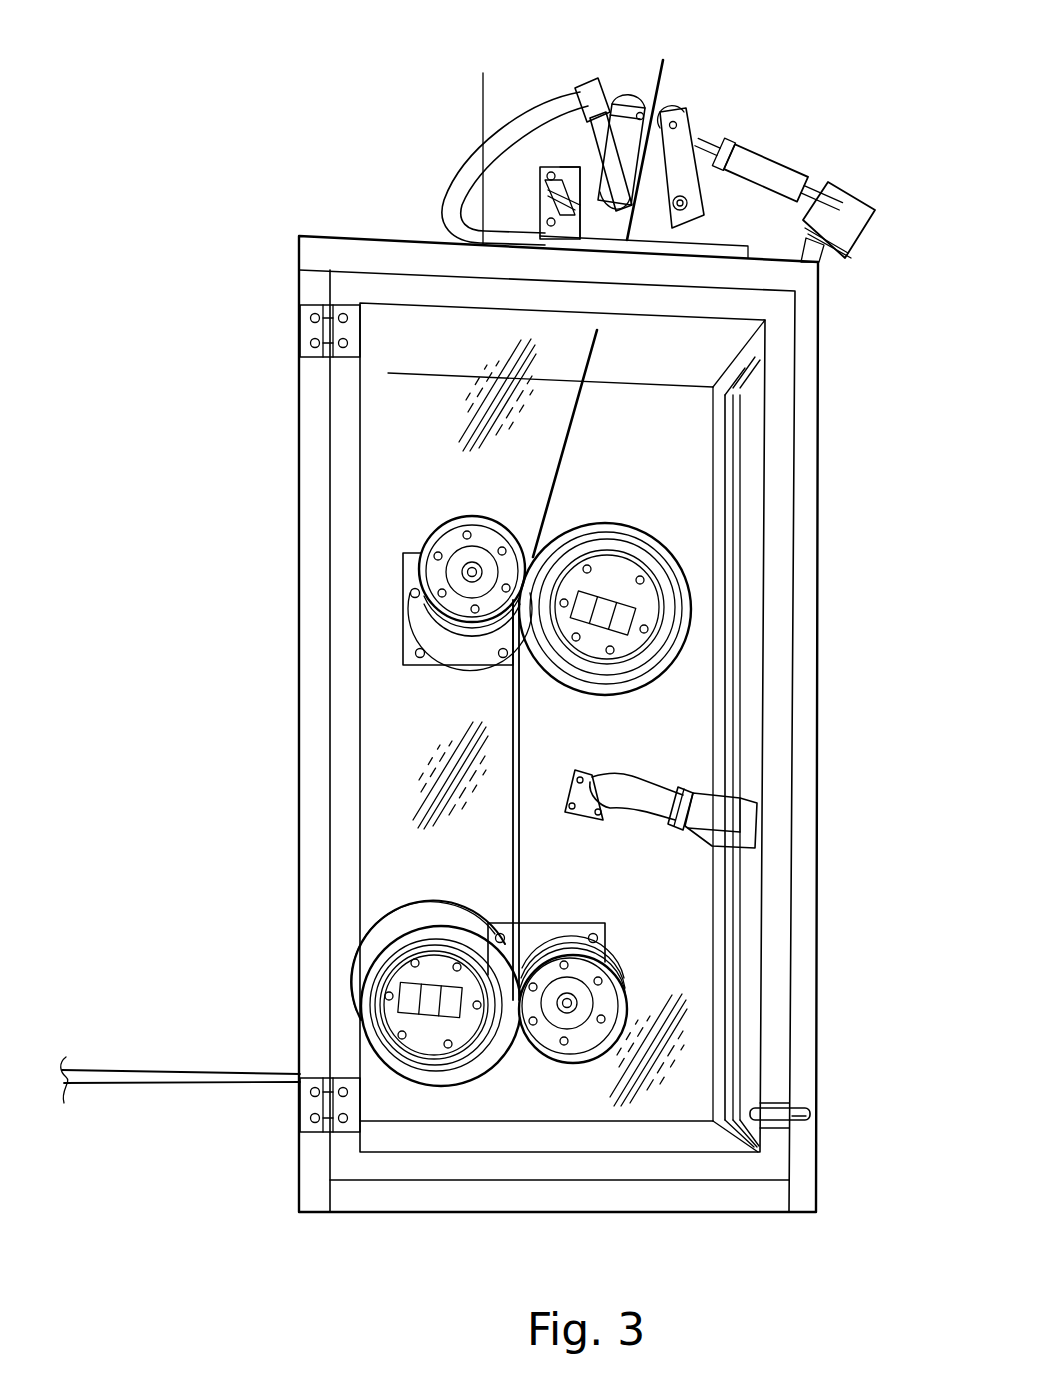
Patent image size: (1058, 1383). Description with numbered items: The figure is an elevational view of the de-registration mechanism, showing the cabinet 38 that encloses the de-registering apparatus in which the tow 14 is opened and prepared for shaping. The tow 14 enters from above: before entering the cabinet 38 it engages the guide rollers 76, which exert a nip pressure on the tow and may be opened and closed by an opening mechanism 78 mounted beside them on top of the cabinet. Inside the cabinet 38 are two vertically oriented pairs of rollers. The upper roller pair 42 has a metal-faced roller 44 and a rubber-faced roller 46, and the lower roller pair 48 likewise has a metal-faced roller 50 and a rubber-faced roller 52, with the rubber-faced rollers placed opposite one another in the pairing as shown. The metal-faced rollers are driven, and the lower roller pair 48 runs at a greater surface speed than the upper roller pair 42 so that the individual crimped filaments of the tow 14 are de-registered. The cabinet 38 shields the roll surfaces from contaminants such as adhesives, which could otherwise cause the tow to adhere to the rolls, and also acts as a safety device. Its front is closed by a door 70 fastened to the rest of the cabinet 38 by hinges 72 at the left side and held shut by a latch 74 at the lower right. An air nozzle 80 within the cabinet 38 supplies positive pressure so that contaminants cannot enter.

The tow 14 is at (672, 64).
The cabinet 38 is at (224, 292).
The roller pair 42 is at (578, 490).
The metal-faced roller 44 is at (433, 527).
The rubber-faced roller 46 is at (652, 543).
The roller pair 48 is at (558, 892).
The metal-faced roller 50 is at (620, 981).
The rubber-faced roller 52 is at (437, 923).
The door 70 is at (340, 545).
The hinges 72 is at (305, 335).
The latch 74 is at (812, 1115).
The guide rollers 76 is at (698, 118).
The opening mechanism 78 is at (770, 157).
The air nozzle 80 is at (642, 792).